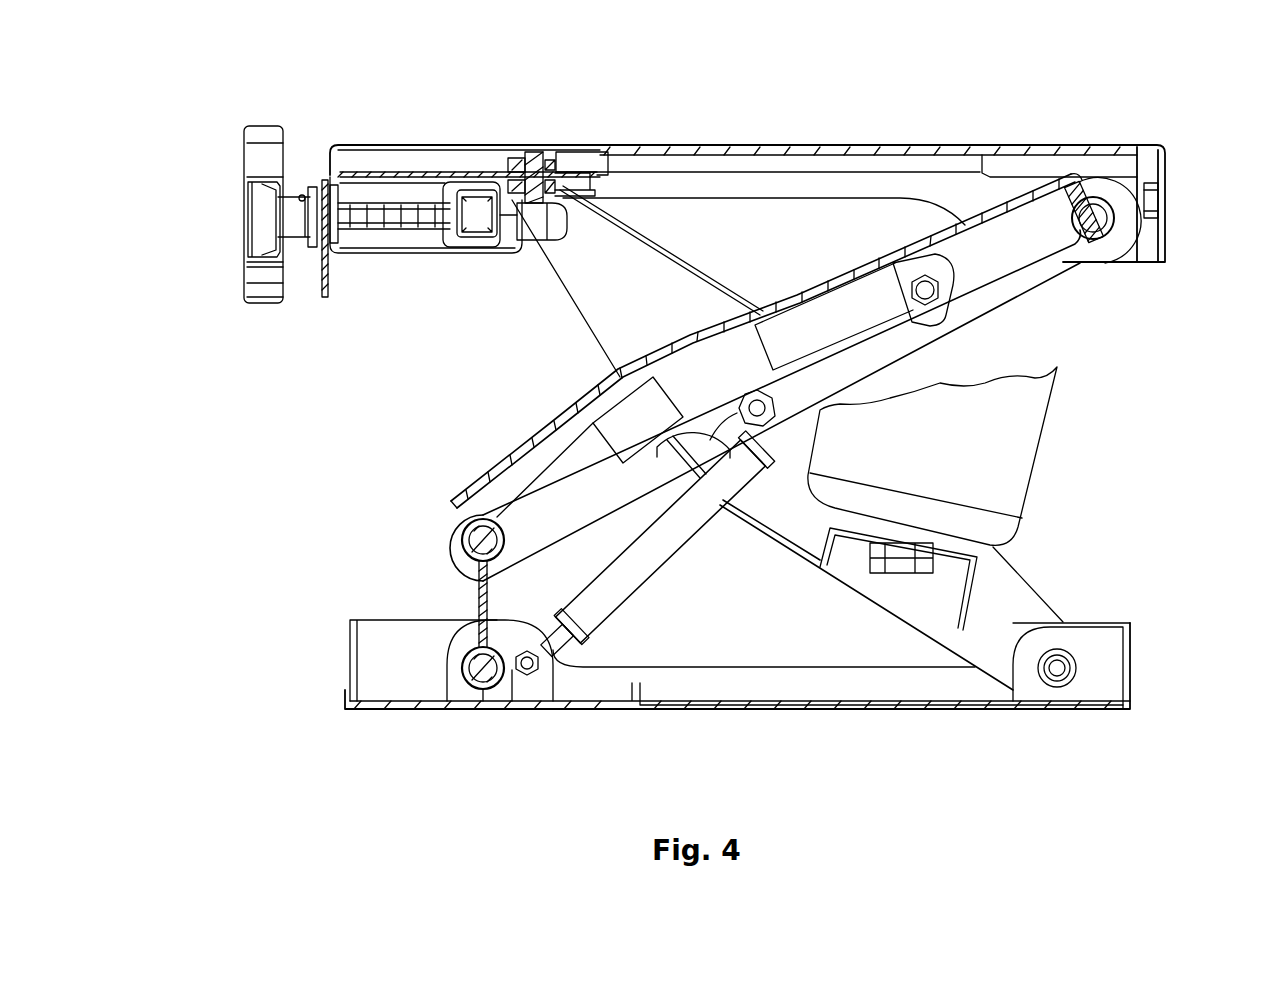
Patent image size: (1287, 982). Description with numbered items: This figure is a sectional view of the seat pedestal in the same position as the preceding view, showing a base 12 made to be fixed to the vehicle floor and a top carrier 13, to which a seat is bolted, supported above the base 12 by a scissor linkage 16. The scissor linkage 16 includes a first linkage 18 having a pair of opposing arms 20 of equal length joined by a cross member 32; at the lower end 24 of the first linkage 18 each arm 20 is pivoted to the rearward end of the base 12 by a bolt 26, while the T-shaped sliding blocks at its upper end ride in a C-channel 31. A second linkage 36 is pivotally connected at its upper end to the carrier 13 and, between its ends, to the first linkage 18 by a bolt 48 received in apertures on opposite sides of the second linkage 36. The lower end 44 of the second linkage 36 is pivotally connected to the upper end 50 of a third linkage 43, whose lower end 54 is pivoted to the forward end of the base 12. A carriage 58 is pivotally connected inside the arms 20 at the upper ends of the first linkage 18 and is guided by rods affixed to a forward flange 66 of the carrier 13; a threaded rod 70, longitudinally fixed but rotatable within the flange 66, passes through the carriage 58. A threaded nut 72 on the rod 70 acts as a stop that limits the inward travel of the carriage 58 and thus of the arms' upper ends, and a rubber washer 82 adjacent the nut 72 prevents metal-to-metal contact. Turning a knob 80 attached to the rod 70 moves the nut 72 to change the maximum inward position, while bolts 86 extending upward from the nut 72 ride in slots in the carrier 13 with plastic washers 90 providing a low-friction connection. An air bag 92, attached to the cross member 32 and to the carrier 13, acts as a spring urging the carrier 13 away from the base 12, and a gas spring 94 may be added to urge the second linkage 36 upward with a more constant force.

The base 12 is at (345, 652).
The top carrier 13 is at (1165, 170).
The scissor linkage 16 is at (505, 355).
The first linkage 18 is at (560, 378).
The arms 20 is at (553, 285).
The lower end of first linkage 24 is at (1010, 670).
The bolt 26 is at (1062, 668).
The C-channel 31 is at (372, 252).
The cross member 32 is at (990, 578).
The second linkage 36 is at (553, 500).
The third linkage 43 is at (478, 608).
The lower end of second linkage 44 is at (458, 526).
The bolt 48 is at (700, 440).
The upper end of third linkage 50 is at (462, 549).
The lower end of third linkage 54 is at (483, 690).
The carriage 58 is at (475, 240).
The forward flange 66 is at (322, 290).
The threaded rod 70 is at (567, 192).
The threaded nut 72 is at (553, 237).
The knob 80 is at (244, 160).
The rubber washer 82 is at (525, 185).
The bolts 86 is at (560, 152).
The plastic washers 90 is at (545, 162).
The air bag 92 is at (1030, 440).
The gas spring 94 is at (655, 550).